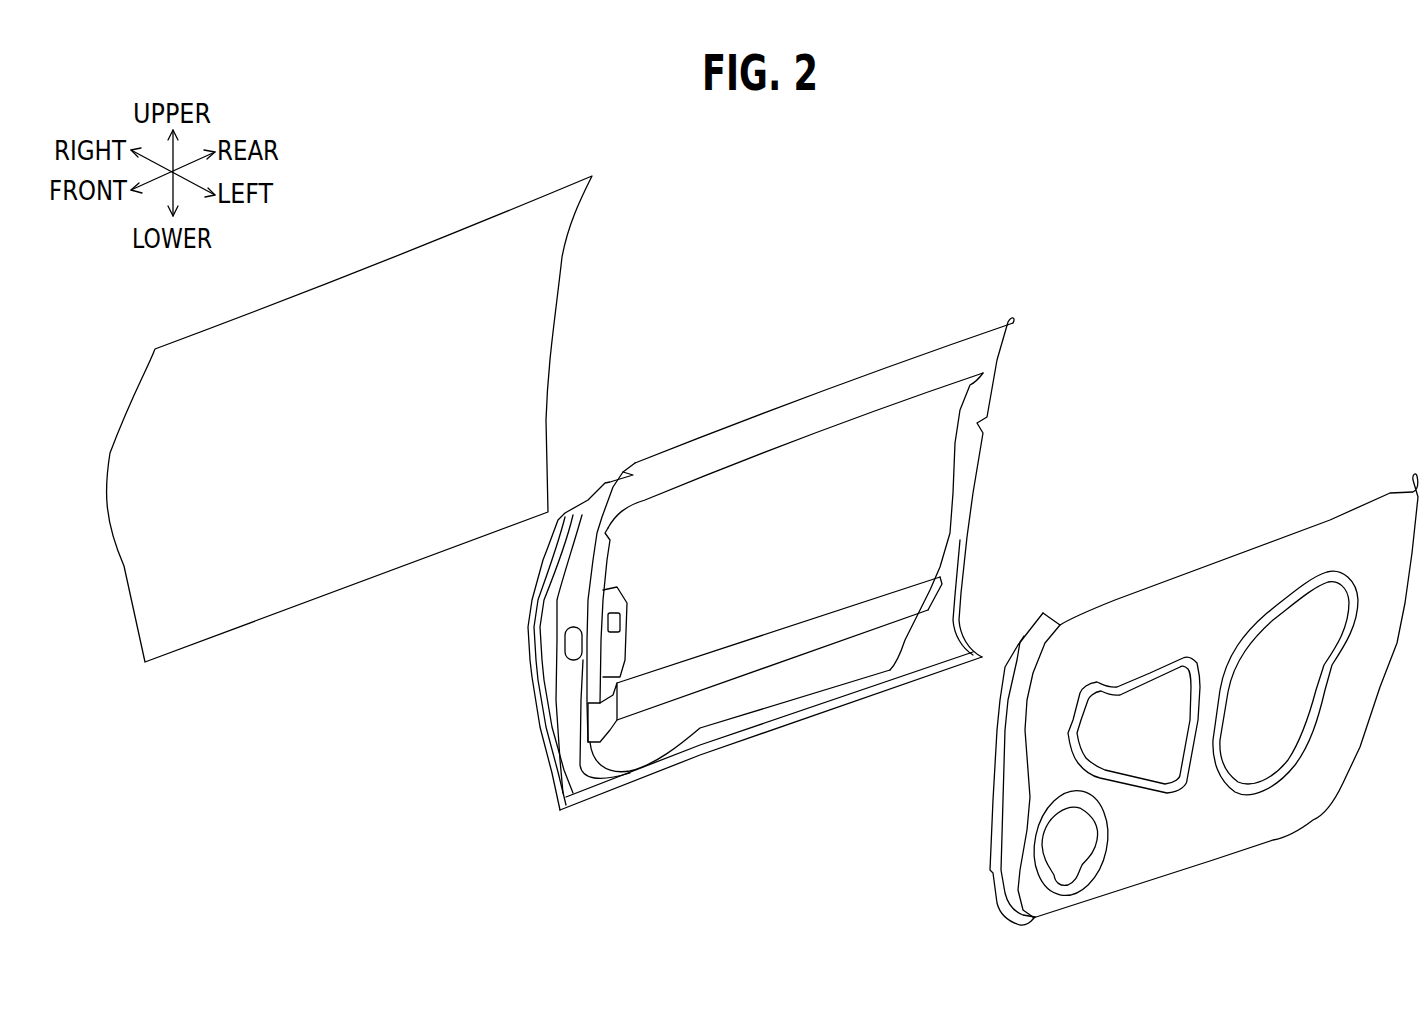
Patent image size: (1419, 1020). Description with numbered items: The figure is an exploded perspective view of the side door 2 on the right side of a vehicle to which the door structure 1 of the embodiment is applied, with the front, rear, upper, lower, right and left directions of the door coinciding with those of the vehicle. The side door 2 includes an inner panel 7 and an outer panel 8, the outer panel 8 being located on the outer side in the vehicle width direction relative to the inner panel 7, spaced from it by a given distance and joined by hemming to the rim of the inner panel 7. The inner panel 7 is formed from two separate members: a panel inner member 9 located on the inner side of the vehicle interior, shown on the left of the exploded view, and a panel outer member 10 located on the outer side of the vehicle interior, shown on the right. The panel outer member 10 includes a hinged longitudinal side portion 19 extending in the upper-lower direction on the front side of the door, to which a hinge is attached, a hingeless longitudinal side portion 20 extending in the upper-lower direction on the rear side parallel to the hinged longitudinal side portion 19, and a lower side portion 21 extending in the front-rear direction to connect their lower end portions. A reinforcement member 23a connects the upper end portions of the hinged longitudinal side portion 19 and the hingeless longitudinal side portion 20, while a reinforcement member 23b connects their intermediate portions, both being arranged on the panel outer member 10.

The door structure 1 is at (762, 559).
The side door 2 is at (762, 559).
The inner panel 7 is at (947, 637).
The outer panel 8 is at (403, 242).
The panel inner member 9 is at (993, 858).
The panel outer member 10 is at (761, 604).
The hinged longitudinal side portion 19 is at (573, 601).
The hingeless longitudinal side portion 20 is at (968, 458).
The lower side portion 21 is at (782, 730).
The reinforcement member 23a is at (787, 407).
The reinforcement member 23b is at (787, 627).